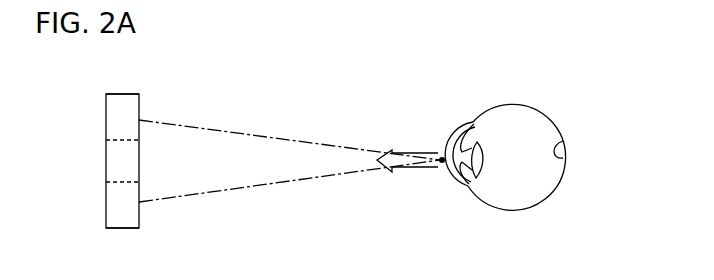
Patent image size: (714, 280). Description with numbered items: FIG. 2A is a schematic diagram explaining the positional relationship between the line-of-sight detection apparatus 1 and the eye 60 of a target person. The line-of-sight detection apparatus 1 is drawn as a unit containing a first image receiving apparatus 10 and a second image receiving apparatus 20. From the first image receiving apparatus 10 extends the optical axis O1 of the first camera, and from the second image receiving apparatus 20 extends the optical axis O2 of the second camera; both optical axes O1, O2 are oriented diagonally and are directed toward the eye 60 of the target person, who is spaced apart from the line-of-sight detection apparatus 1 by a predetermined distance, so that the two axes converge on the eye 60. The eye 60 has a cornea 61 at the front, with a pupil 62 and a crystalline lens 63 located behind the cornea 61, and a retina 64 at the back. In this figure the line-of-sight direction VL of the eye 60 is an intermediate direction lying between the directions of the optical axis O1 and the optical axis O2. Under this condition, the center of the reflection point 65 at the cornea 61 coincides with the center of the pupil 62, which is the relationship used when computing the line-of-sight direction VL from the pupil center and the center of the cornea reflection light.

The line-of-sight detection apparatus 1 is at (84, 161).
The first image receiving apparatus 10 is at (112, 207).
The second image receiving apparatus 20 is at (112, 119).
The optical axis of the first camera O1 is at (236, 189).
The optical axis of the second camera O2 is at (236, 131).
The line-of-sight direction VL is at (393, 174).
The eye 60 is at (517, 101).
The cornea 61 is at (447, 182).
The pupil 62 is at (452, 132).
The crystalline lens 63 is at (484, 177).
The retina 64 is at (562, 146).
The reflection point 65 is at (438, 158).